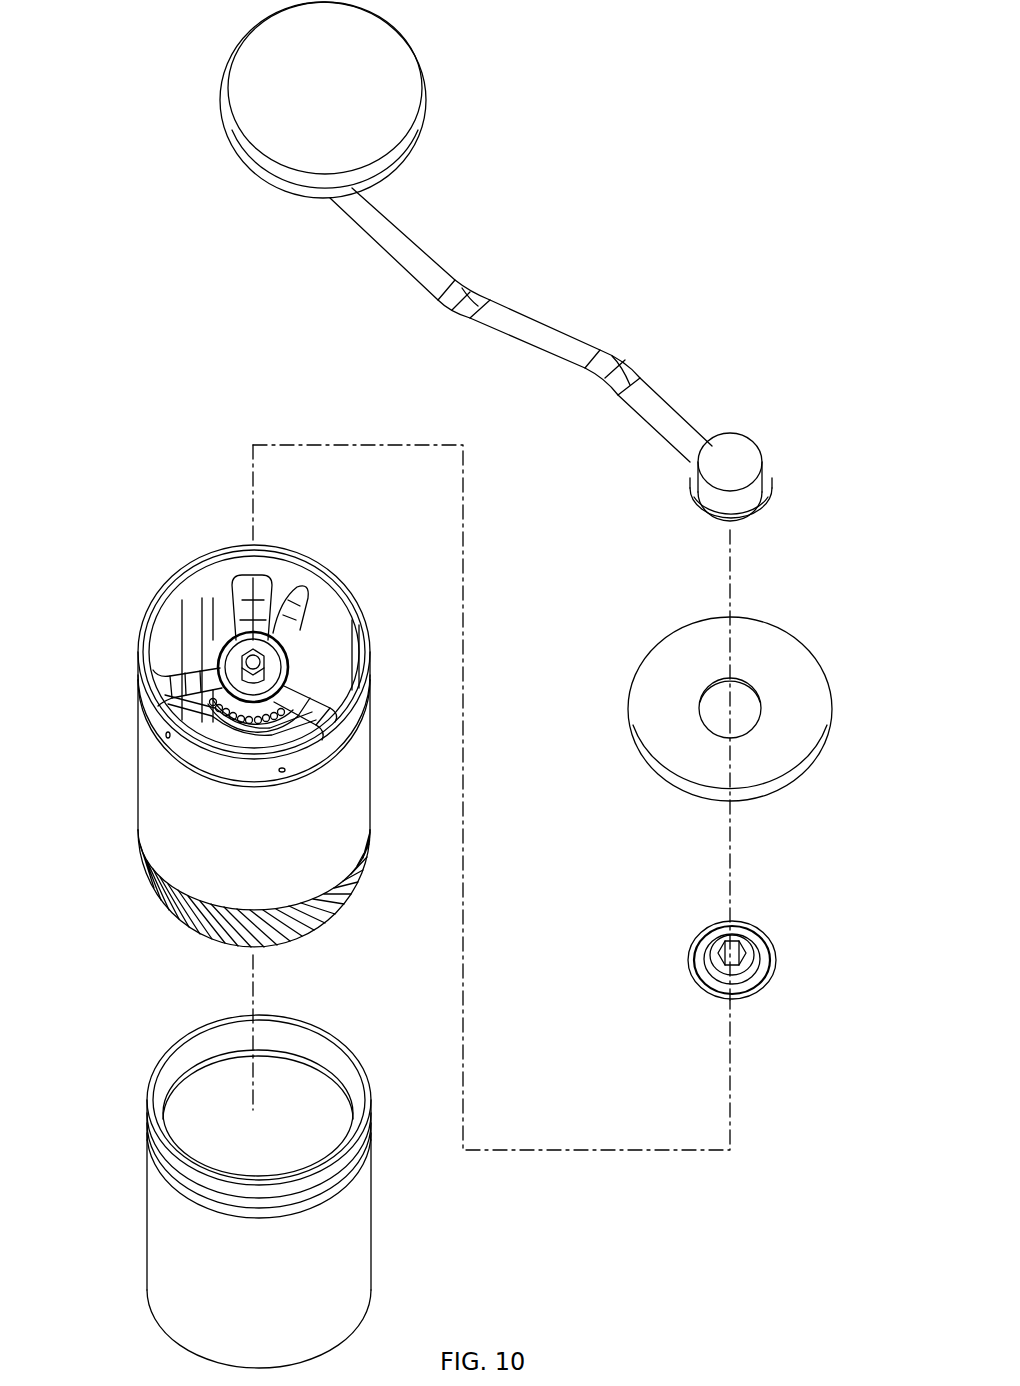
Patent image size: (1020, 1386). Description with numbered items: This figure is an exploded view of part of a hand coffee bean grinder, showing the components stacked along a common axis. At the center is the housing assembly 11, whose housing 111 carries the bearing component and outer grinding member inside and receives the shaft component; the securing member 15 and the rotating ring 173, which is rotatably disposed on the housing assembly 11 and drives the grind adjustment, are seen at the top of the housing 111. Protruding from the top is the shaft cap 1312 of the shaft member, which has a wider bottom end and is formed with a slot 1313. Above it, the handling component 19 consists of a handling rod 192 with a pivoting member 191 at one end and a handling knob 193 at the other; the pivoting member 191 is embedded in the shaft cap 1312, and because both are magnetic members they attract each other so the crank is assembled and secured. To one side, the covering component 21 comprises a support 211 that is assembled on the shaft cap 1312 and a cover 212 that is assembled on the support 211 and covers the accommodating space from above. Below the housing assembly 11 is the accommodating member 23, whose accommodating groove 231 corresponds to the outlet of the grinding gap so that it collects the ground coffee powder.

The housing assembly 11 is at (118, 756).
The housing 111 is at (165, 820).
The securing member 15 is at (213, 640).
The shaft cap 1312 is at (225, 660).
The slot 1313 is at (272, 640).
The rotating ring 173 is at (150, 632).
The handling component 19 is at (733, 213).
The pivoting member 191 is at (728, 455).
The handling rod 192 is at (510, 332).
The handling knob 193 is at (372, 120).
The covering component 21 is at (628, 915).
The support 211 is at (710, 960).
The cover 212 is at (675, 762).
The accommodating member 23 is at (187, 1248).
The accommodating groove 231 is at (213, 1120).